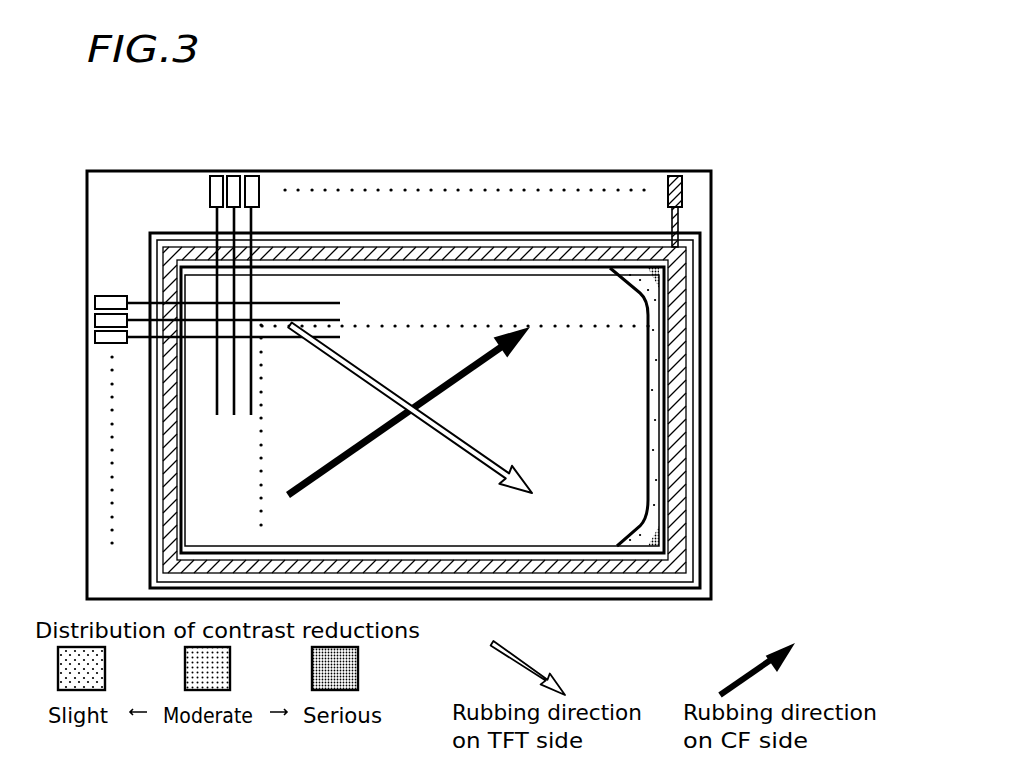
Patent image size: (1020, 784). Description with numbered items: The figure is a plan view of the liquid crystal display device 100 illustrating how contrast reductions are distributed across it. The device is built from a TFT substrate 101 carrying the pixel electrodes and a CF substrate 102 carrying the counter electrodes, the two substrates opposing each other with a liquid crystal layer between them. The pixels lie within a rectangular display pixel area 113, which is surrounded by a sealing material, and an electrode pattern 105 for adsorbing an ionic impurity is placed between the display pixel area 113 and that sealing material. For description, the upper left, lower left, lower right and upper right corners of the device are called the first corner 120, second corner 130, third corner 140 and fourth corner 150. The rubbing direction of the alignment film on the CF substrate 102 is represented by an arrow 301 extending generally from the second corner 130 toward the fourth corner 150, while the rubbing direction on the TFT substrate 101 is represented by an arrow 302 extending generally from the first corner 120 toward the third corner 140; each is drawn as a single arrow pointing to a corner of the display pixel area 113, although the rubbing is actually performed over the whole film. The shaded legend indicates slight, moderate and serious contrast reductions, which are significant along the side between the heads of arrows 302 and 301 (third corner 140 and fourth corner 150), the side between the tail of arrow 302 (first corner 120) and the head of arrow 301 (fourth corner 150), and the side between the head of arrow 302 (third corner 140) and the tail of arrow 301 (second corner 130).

The liquid crystal display device 100 is at (677, 70).
The TFT substrate 101 is at (472, 178).
The CF substrate 102 is at (150, 431).
The electrode pattern 105 is at (683, 188).
The display pixel area 113 is at (627, 417).
The first corner 120 is at (152, 241).
The second corner 130 is at (160, 567).
The third corner 140 is at (687, 568).
The fourth corner 150 is at (673, 248).
The arrow 301 is at (477, 372).
The arrow 302 is at (477, 452).